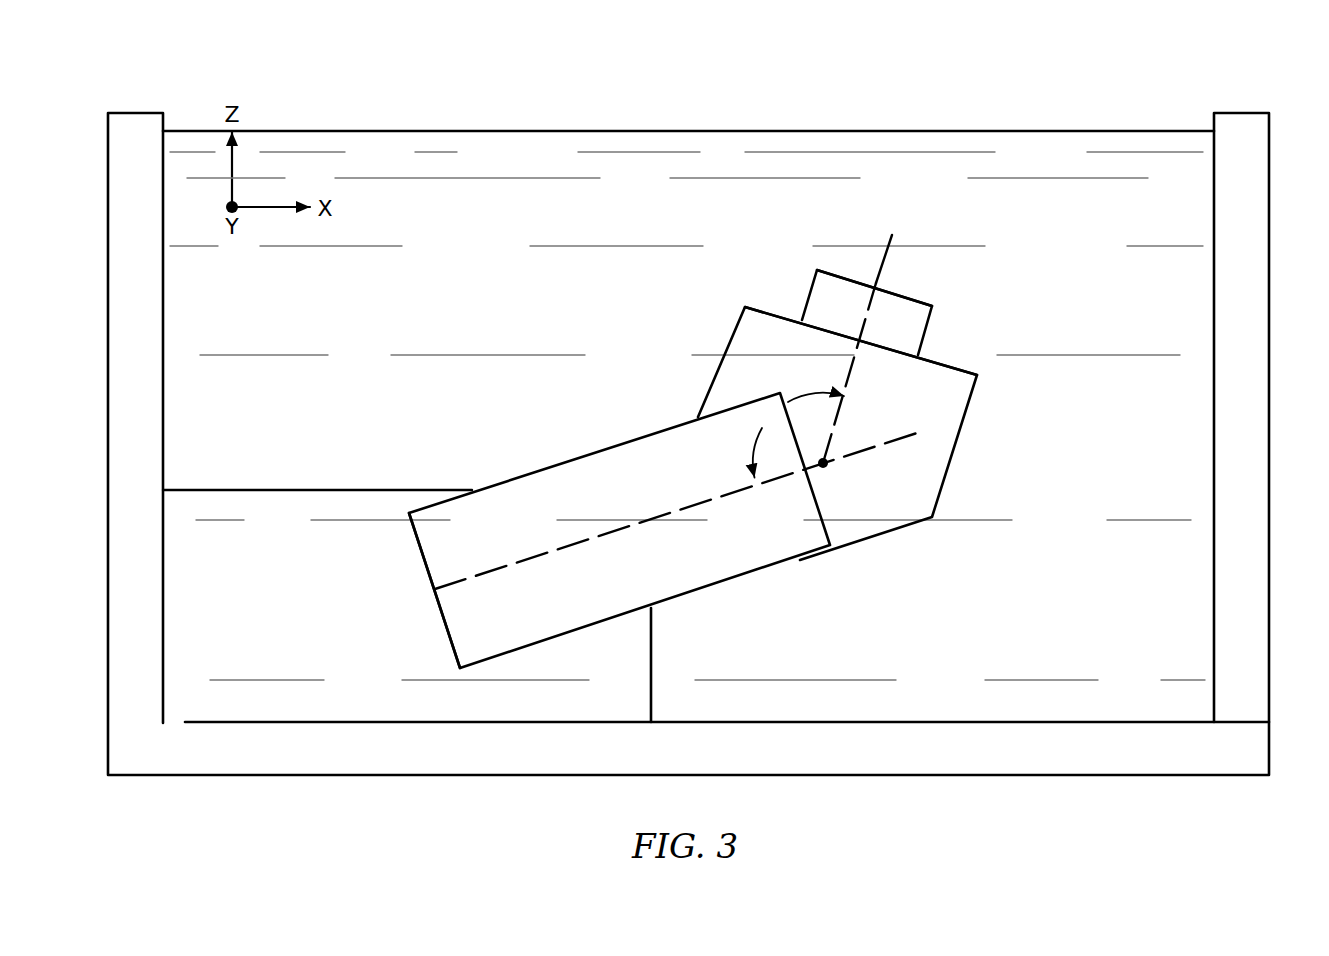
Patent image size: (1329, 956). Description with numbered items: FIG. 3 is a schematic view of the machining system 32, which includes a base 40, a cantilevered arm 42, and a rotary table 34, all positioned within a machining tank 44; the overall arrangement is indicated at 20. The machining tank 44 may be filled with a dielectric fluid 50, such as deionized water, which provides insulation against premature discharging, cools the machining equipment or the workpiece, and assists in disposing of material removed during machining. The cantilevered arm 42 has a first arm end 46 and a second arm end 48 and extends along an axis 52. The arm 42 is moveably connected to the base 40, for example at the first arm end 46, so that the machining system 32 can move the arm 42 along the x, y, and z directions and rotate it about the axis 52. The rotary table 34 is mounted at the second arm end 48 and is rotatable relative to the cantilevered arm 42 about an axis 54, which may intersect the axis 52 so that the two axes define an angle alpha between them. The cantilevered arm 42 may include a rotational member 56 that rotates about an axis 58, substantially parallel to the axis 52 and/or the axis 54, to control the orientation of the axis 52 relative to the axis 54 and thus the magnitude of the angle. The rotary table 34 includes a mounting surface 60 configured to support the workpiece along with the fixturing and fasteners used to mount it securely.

The measurement system 20 is at (1192, 93).
The machining system 32 is at (298, 458).
The rotary table 34 is at (920, 327).
The base 40 is at (334, 507).
The cantilevered arm 42 is at (712, 568).
The machining tank 44 is at (1243, 177).
The first arm end 46 is at (415, 550).
The second arm end 48 is at (768, 308).
The dielectric fluid 50 is at (636, 308).
The axis 52 is at (457, 587).
The axis 54 is at (893, 261).
The rotational member 56 is at (930, 460).
The axis 58 is at (830, 466).
The mounting surface 60 is at (846, 273).